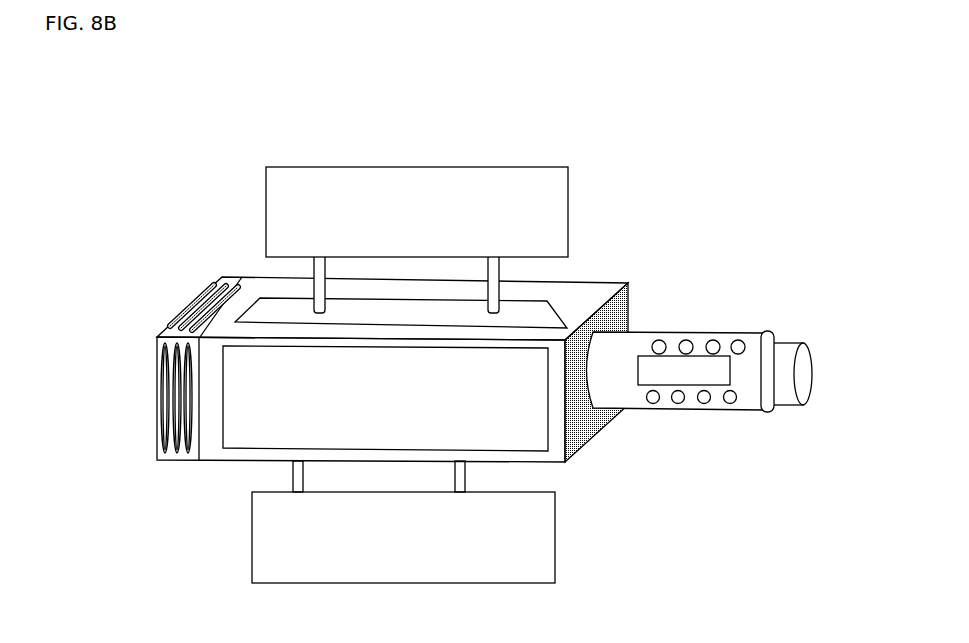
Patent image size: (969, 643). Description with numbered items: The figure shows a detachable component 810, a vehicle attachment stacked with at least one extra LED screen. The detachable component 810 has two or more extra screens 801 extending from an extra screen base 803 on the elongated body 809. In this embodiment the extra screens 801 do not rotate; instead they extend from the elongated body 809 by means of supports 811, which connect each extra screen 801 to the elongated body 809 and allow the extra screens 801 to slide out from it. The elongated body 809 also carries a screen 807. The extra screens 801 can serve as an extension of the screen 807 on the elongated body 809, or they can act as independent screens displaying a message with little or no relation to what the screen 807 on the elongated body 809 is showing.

The detachable component 810 is at (247, 124).
The extra screen 801 is at (245, 193).
The extra screen base 803 is at (265, 303).
The screen 807 is at (527, 420).
The elongated body 809 is at (653, 292).
The support 811 is at (503, 290).